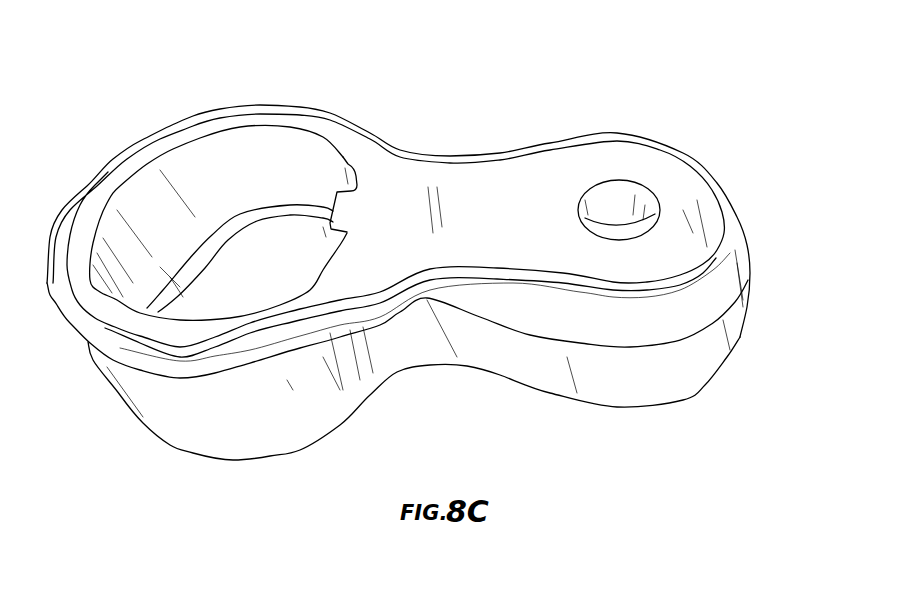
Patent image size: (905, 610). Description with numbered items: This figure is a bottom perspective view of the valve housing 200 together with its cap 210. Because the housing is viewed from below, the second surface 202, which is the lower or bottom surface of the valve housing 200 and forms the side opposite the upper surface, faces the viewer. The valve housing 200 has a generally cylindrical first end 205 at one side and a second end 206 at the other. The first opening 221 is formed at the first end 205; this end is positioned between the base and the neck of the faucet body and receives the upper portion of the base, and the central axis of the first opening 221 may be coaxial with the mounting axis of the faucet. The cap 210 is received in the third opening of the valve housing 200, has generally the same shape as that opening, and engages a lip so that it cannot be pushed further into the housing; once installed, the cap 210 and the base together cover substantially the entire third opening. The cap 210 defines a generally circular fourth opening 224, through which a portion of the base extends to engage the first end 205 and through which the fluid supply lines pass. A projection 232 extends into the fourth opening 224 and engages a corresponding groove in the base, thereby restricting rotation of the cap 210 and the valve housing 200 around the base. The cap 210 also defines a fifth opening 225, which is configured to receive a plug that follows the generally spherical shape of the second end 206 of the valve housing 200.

The valve housing 200 is at (590, 472).
The second surface 202 is at (268, 110).
The first end 205 is at (76, 392).
The second end 206 is at (728, 395).
The cap 210 is at (477, 200).
The first opening 221 is at (187, 293).
The fourth opening 224 is at (342, 157).
The fifth opening 225 is at (637, 192).
The projection 232 is at (342, 215).